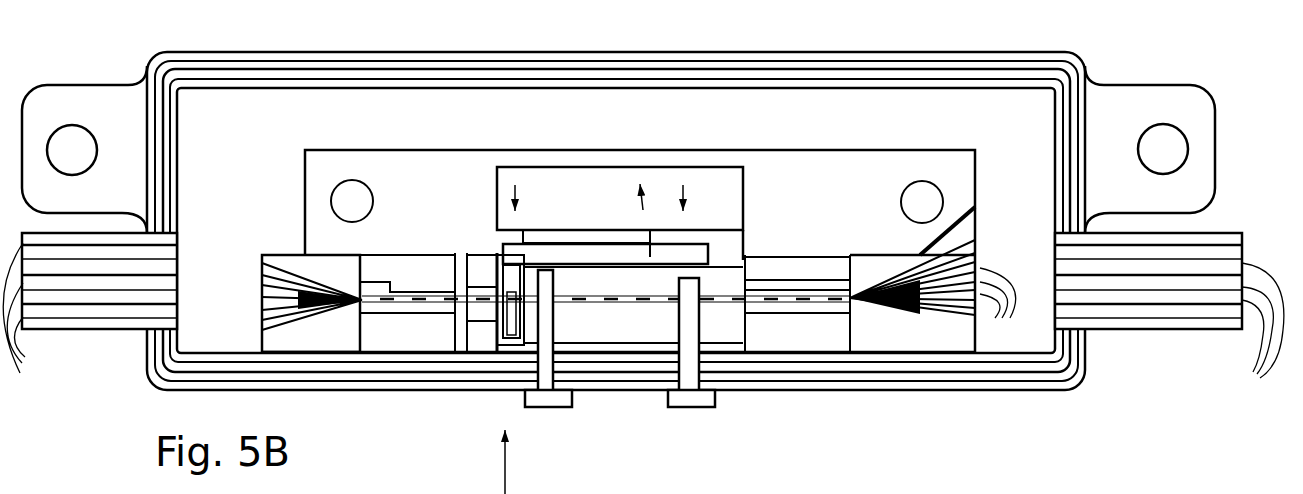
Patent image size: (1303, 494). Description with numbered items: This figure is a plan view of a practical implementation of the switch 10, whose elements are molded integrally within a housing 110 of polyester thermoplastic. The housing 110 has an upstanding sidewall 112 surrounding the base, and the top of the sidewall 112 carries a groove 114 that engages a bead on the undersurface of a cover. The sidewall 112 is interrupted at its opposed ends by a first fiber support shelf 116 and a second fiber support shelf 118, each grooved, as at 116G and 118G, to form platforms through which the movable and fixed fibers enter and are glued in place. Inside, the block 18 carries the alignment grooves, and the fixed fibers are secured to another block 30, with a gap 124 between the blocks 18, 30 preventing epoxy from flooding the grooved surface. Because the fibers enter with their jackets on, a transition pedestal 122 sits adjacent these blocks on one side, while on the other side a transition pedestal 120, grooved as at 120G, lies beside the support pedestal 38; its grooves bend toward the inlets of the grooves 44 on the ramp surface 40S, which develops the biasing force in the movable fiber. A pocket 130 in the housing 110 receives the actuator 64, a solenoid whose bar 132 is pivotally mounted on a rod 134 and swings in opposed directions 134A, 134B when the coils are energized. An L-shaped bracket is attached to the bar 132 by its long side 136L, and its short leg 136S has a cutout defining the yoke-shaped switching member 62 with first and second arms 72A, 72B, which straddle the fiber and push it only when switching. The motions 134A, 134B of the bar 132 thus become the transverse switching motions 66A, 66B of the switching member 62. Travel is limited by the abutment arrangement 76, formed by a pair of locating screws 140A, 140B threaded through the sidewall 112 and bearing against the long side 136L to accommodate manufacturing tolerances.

The switch 10 is at (992, 42).
The housing 110 is at (606, 48).
The sidewall 112 is at (485, 52).
The groove 114 is at (318, 68).
The first fiber support shelf 116 is at (1130, 329).
The groove 116G is at (1237, 328).
The second fiber support shelf 118 is at (125, 331).
The groove 118G is at (43, 308).
The block 18 is at (440, 255).
The block 30 is at (397, 255).
The transition pedestal 122 is at (277, 255).
The gap 124 is at (456, 330).
The first arm 72A is at (496, 322).
The second arm 72B is at (493, 240).
The short leg 136S is at (484, 302).
The long side 136L is at (614, 250).
The switching member 62 is at (530, 319).
The pocket 130 is at (578, 172).
The actuator 64 is at (712, 183).
The bar 132 is at (560, 242).
The rod 134 is at (590, 240).
The direction 134A is at (643, 210).
The direction 134B is at (683, 185).
The direction 66B is at (515, 185).
The direction 66A is at (506, 472).
The abutment arrangement 76 is at (564, 414).
The groove 44 is at (853, 304).
The ramp surface 40S is at (810, 297).
The support pedestal 38 is at (781, 289).
The transition pedestal 120 is at (975, 252).
The groove 120G is at (1013, 305).
The locating screw 140A is at (573, 398).
The locating screw 140B is at (716, 405).